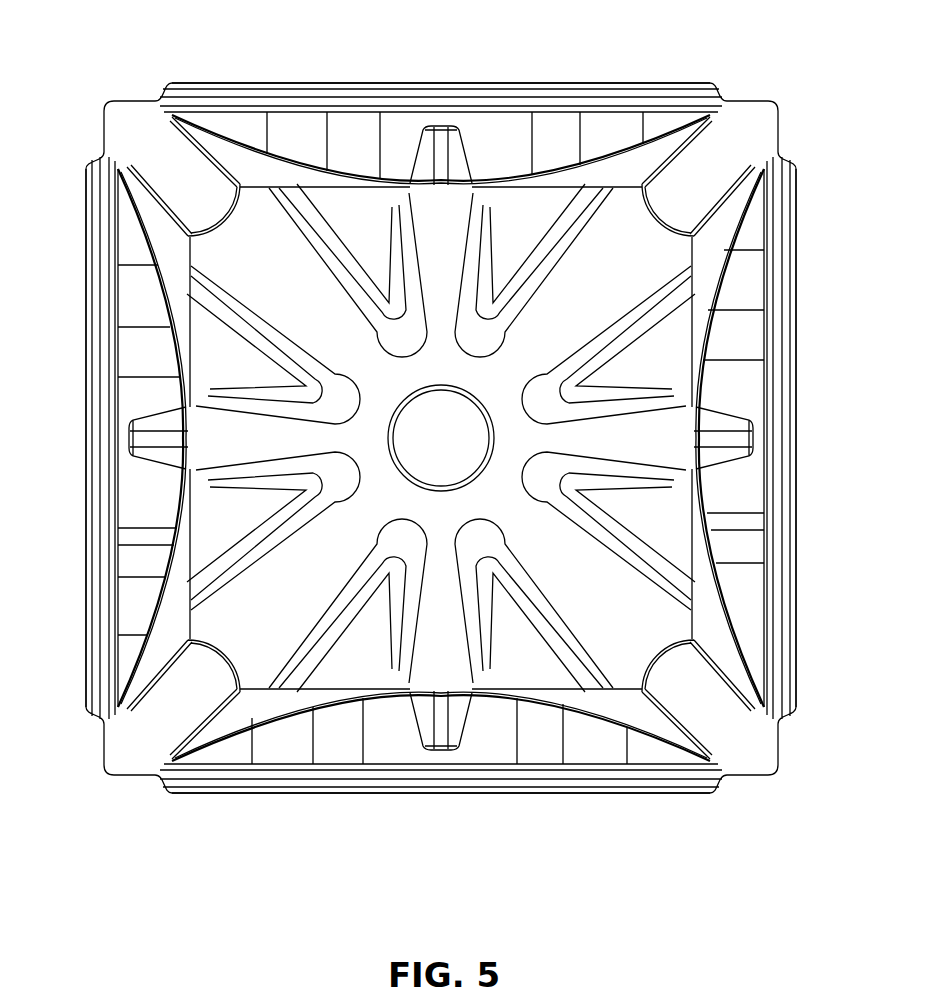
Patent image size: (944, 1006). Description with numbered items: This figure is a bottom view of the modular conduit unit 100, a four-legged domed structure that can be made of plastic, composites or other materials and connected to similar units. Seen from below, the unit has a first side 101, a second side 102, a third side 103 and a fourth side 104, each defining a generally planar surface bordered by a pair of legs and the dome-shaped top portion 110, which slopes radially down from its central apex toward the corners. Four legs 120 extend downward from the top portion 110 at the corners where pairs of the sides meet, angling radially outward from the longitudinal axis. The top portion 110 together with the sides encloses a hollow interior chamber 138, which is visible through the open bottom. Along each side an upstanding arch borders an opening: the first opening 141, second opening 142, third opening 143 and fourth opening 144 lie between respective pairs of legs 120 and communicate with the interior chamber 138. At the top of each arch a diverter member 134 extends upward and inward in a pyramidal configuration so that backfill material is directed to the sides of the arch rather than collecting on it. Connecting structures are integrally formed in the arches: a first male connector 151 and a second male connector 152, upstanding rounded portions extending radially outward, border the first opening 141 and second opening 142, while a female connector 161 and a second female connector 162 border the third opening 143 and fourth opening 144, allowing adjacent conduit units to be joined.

The conduit unit 100 is at (124, 85).
The first side 101 is at (806, 669).
The second side 102 is at (578, 804).
The third side 103 is at (670, 74).
The fourth side 104 is at (72, 687).
The top portion 110 is at (457, 449).
The legs 120 is at (174, 180).
The diverter members 134 is at (461, 157).
The interior chamber 138 is at (356, 448).
The first opening 141 is at (804, 586).
The second opening 142 is at (515, 807).
The third opening 143 is at (602, 71).
The fourth opening 144 is at (86, 631).
The first male connector 151 is at (790, 399).
The second male connector 152 is at (646, 786).
The female connector 161 is at (489, 86).
The second female connector 162 is at (93, 484).